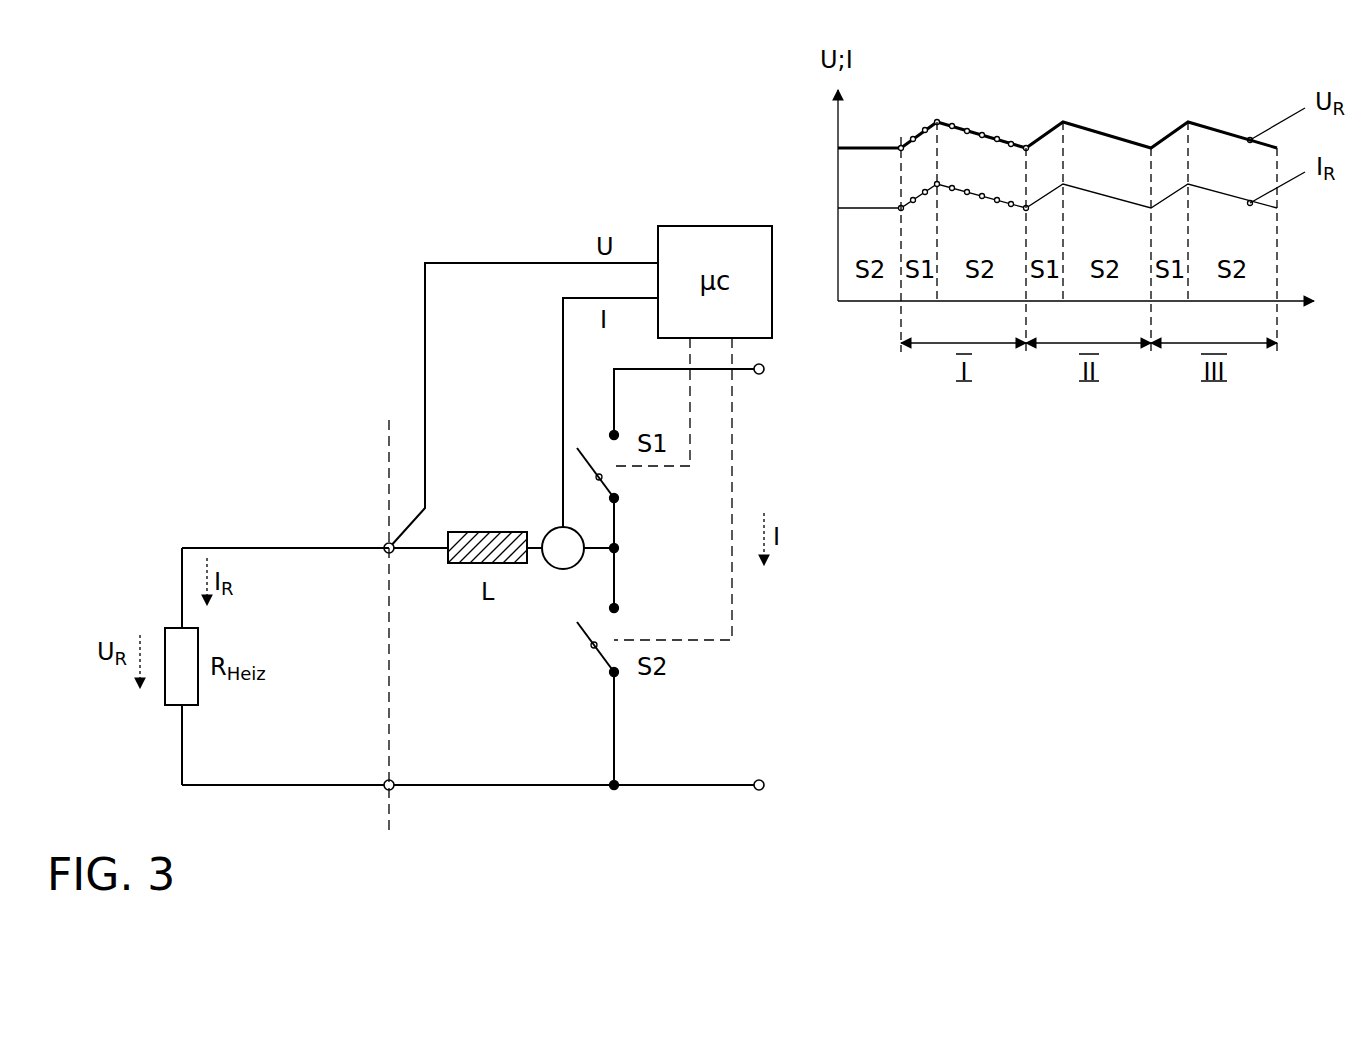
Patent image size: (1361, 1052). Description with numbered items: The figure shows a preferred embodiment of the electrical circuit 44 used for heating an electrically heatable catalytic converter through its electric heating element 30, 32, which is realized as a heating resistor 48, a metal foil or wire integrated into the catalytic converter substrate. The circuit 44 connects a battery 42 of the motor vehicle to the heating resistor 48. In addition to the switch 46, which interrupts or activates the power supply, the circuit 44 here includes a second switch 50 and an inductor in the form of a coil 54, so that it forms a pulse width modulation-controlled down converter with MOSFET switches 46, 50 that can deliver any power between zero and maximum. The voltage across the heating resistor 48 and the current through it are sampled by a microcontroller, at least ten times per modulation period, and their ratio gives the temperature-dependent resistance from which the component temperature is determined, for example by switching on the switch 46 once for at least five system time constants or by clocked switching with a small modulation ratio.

The electric heating element 30 is at (143, 628).
The electric heating element 32 is at (179, 640).
The battery 42 is at (765, 372).
The circuit 44 is at (288, 548).
The switch 46 is at (602, 478).
The heating resistor 48 is at (179, 692).
The second switch 50 is at (591, 648).
The coil 54 is at (488, 532).